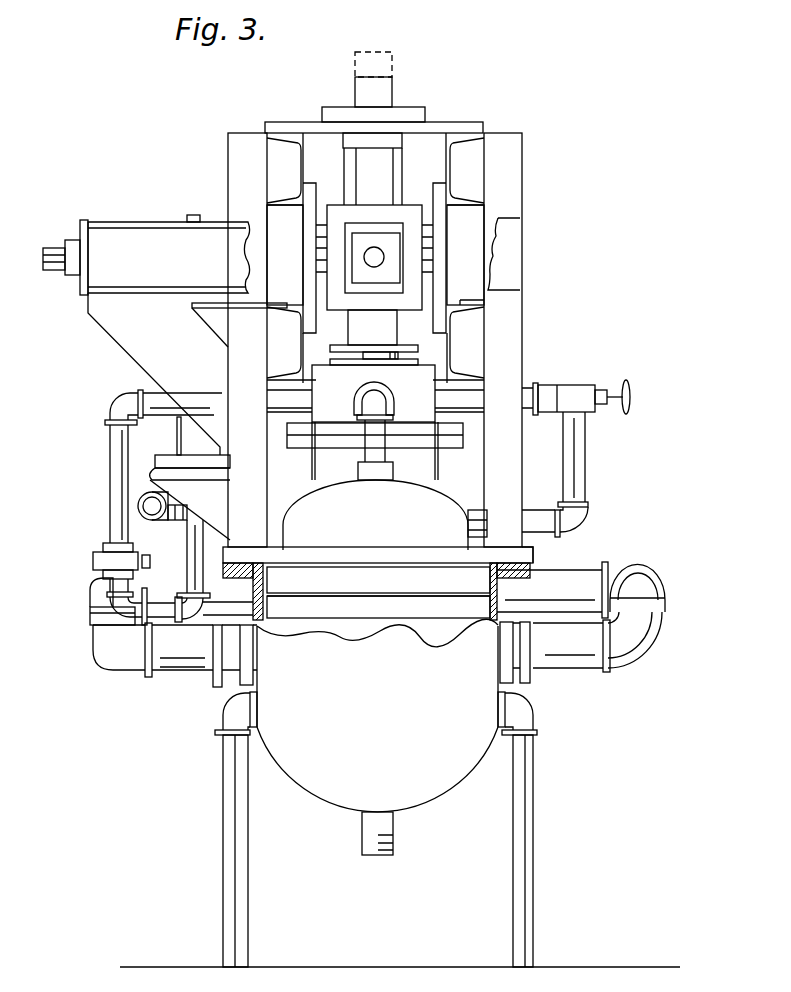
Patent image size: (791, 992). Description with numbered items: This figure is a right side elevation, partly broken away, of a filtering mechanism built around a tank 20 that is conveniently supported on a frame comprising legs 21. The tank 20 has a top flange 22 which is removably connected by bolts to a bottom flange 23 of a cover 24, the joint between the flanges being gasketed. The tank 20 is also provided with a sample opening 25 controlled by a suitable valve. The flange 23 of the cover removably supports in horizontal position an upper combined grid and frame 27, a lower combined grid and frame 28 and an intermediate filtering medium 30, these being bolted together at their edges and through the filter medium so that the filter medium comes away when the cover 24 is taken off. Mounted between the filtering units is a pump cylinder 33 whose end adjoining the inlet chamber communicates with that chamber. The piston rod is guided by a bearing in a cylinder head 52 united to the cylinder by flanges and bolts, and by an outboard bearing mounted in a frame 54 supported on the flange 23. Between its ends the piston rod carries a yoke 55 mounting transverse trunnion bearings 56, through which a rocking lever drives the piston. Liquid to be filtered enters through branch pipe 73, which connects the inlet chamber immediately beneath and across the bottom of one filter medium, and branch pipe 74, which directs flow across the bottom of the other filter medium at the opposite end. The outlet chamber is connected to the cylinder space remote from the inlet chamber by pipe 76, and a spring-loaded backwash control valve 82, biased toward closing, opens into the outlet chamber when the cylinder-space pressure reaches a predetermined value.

The tank 20 is at (377, 715).
The legs 21 is at (228, 833).
The top flange 22 is at (530, 573).
The bottom flange 23 is at (533, 551).
The cover 24 is at (405, 539).
The sample opening 25 is at (370, 829).
The upper combined grid and frame 27 is at (378, 581).
The lower combined grid and frame 28 is at (378, 611).
The intermediate filtering medium 30 is at (376, 597).
The pump cylinder 33 is at (425, 470).
The cylinder head 52 is at (373, 422).
The frame 54 is at (512, 161).
The yoke 55 is at (395, 208).
The transverse trunnion bearings 56 is at (375, 255).
The branch pipe 73 is at (195, 665).
The branch pipe 74 is at (590, 652).
The pipe 76 is at (372, 447).
The backwash control valve 82 is at (572, 388).